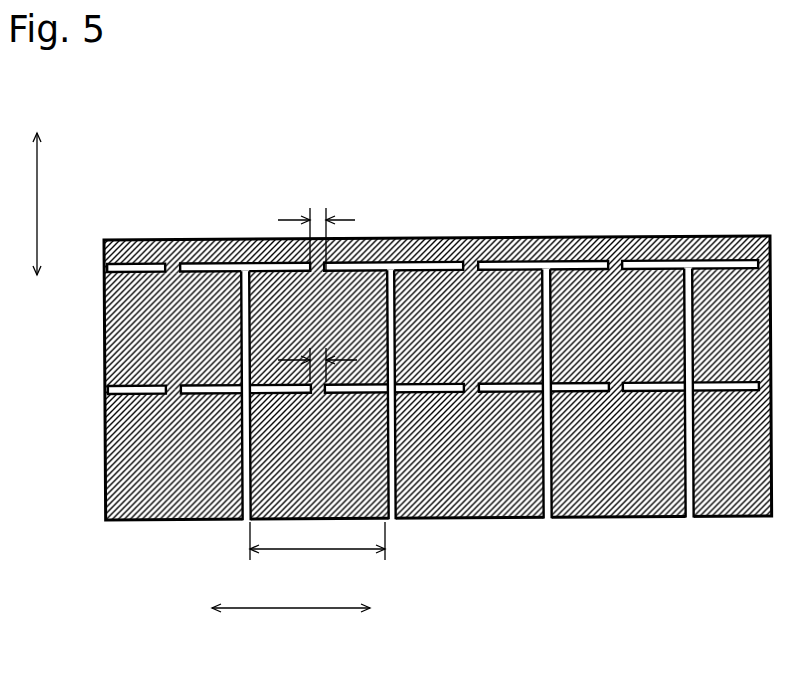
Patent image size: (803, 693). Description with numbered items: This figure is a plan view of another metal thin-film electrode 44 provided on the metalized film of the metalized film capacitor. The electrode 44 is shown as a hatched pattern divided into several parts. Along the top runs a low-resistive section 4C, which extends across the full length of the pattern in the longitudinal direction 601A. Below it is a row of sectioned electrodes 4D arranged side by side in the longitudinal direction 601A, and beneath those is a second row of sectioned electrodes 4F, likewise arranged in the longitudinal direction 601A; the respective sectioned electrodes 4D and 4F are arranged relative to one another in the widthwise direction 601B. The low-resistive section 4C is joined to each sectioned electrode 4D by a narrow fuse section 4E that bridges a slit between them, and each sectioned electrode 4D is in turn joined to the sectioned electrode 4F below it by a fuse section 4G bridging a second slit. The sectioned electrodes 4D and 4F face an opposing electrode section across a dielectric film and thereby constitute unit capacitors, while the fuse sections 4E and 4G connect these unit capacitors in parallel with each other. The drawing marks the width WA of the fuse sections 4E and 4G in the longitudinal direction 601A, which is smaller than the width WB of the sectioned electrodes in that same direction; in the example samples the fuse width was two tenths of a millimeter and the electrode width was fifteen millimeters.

The metal thin-film electrode 44 is at (397, 333).
The low-resistive section 4C is at (478, 248).
The sectioned electrodes 4D is at (270, 322).
The fuse sections 4E is at (303, 259).
The sectioned electrodes 4F is at (295, 462).
The fuse sections 4G is at (258, 398).
The width of fuse sections WA is at (318, 358).
The width of sectioned electrodes WB is at (317, 550).
The longitudinal direction 601A is at (293, 608).
The widthwise direction 601B is at (37, 180).